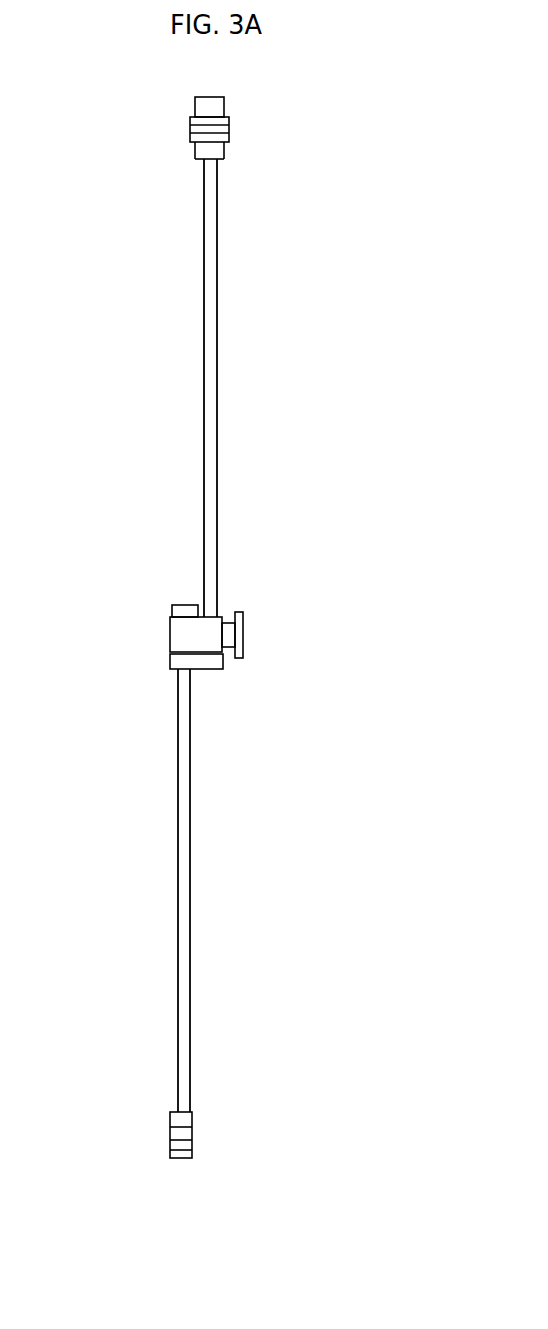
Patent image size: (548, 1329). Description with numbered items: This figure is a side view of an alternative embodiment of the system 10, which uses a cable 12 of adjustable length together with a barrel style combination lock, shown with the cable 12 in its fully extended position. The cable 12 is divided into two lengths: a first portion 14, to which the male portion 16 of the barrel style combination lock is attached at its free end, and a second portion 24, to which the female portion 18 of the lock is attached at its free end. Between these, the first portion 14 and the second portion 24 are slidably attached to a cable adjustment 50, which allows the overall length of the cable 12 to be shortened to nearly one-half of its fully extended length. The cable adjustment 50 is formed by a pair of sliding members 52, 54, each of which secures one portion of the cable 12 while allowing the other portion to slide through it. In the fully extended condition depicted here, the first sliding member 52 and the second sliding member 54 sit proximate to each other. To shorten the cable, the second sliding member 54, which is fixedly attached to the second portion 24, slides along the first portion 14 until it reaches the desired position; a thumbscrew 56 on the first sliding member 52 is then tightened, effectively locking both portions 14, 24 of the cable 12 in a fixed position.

The system 10 is at (69, 457).
The cable 12 is at (212, 890).
The first portion 14 is at (260, 890).
The male portion 16 is at (112, 1104).
The female portion 18 is at (153, 170).
The second portion 24 is at (286, 388).
The cable adjustment 50 is at (203, 652).
The first sliding member 52 is at (236, 603).
The second sliding member 54 is at (255, 701).
The thumbscrew 56 is at (283, 638).